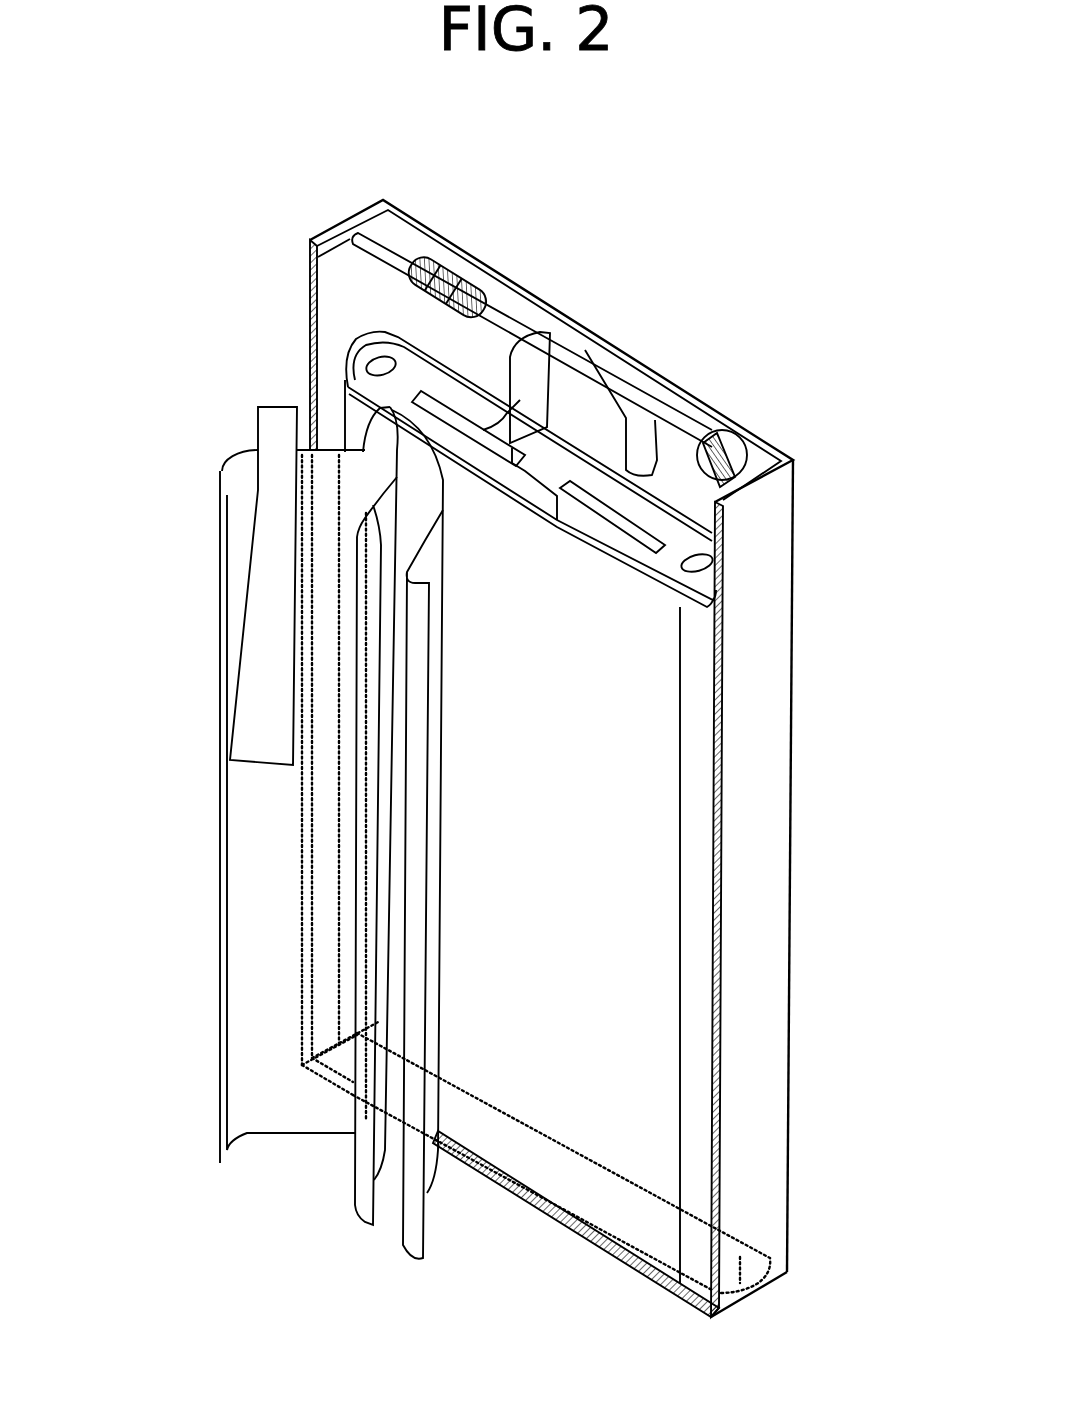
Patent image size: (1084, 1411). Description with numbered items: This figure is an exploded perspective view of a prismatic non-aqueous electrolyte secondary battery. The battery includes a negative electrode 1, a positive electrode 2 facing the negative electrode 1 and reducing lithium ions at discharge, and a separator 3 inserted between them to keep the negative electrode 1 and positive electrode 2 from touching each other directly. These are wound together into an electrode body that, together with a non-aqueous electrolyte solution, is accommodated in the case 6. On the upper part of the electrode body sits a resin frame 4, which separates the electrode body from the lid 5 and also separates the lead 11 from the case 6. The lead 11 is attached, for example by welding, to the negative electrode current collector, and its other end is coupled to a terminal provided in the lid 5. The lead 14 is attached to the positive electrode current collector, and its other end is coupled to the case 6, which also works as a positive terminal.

The negative electrode 1 is at (409, 1243).
The positive electrode 2 is at (238, 1096).
The separator 3 is at (365, 1170).
The resin frame 4 is at (683, 547).
The lid 5 is at (390, 233).
The case 6 is at (776, 774).
The lead 11 is at (308, 262).
The lead 14 is at (267, 423).